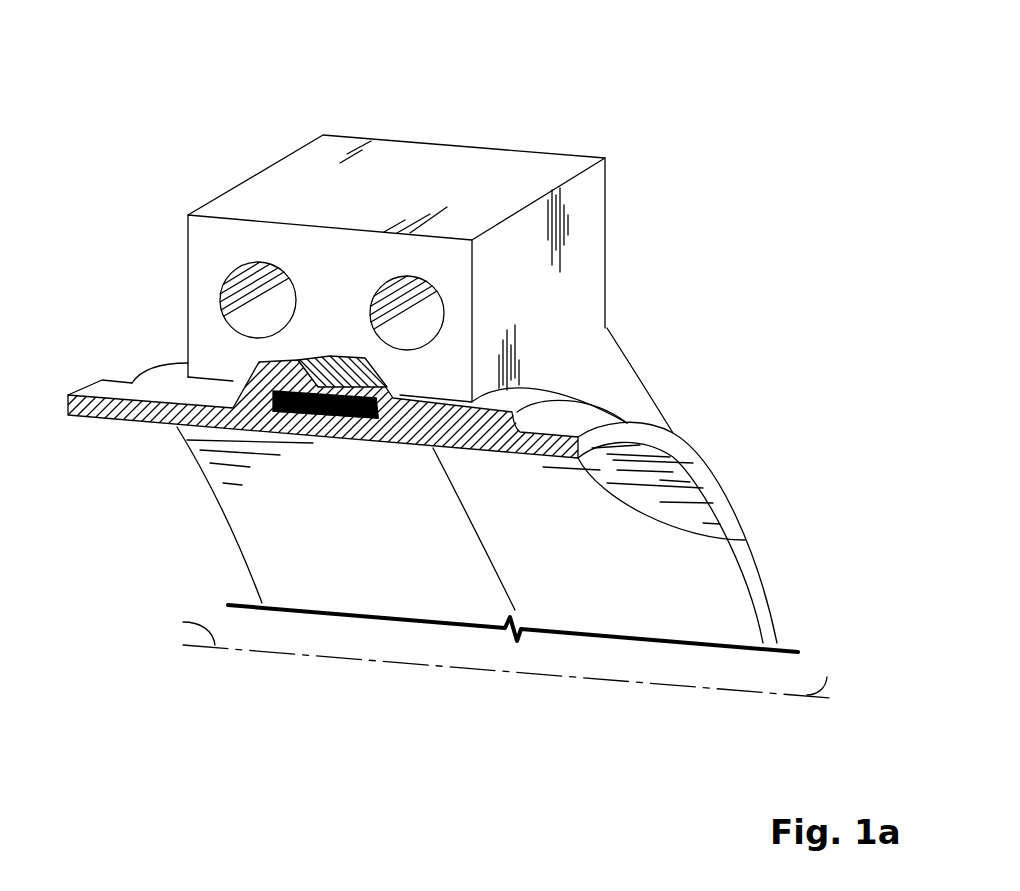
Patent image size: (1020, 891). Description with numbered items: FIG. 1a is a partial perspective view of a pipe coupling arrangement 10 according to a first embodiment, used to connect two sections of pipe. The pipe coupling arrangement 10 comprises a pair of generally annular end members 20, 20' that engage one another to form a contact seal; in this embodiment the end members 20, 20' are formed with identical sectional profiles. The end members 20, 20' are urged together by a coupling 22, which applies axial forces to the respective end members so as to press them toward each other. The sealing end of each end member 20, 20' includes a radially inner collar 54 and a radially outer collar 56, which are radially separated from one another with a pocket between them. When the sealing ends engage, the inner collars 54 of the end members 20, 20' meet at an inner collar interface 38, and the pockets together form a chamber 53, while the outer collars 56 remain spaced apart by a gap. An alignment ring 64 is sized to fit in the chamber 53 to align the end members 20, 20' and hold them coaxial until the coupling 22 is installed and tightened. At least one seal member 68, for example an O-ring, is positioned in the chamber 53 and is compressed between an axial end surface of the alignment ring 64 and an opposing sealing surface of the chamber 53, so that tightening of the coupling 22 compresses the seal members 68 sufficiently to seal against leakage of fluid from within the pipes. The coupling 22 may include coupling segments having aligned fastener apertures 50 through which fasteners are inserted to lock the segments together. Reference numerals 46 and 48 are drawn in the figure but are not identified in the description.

The pipe coupling arrangement 10 is at (750, 56).
The end member 20 is at (324, 419).
The end member 20' is at (509, 562).
The coupling 22 is at (597, 333).
The inner collar interface 38 is at (347, 437).
The rim 46 is at (648, 382).
The housing block 48 is at (203, 226).
The fastener apertures 50 is at (258, 275).
The chamber 53 is at (312, 383).
The radially inner collar 54 is at (317, 432).
The radially outer collar 56 is at (363, 376).
The alignment ring 64 is at (382, 404).
The seal member 68 is at (250, 390).